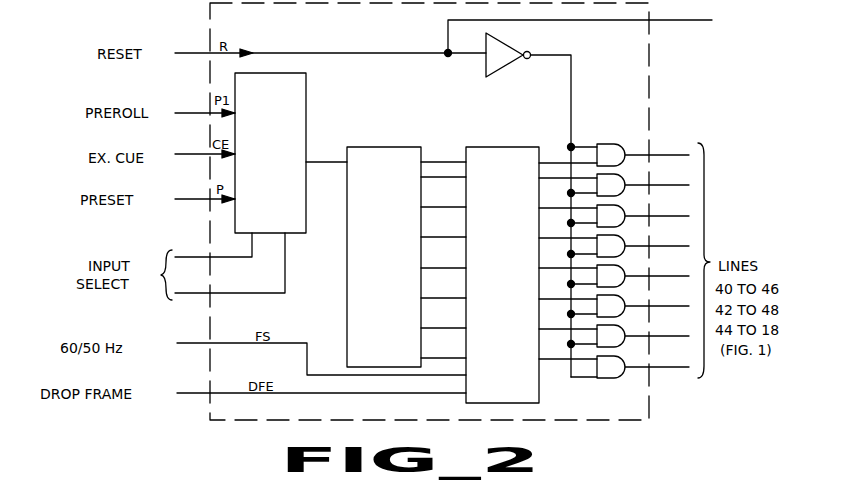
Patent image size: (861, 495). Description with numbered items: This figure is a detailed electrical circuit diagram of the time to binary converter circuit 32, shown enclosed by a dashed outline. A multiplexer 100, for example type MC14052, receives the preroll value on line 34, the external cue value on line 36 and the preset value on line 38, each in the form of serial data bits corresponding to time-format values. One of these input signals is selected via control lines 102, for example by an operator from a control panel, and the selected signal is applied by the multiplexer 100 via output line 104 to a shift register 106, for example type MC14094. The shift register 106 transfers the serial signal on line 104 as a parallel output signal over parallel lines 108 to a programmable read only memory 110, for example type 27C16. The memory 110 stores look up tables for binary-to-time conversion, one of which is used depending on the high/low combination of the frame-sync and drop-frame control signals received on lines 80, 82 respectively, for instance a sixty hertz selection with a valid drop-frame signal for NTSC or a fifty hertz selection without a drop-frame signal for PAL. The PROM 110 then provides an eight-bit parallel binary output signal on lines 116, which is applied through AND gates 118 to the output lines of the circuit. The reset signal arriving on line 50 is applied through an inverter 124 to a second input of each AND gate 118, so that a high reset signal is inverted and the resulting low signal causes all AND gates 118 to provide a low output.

The time to binary converter circuit 32 is at (649, 77).
The line 50 is at (185, 50).
The line 34 is at (185, 112).
The line 36 is at (185, 153).
The line 38 is at (183, 198).
The multiplexer 100 is at (306, 88).
The control lines 102 is at (184, 292).
The output line 104 is at (318, 162).
The shift register 106 is at (388, 148).
The parallel lines 108 is at (455, 358).
The programmable read only memory 110 is at (488, 148).
The lines 116 is at (562, 163).
The AND gates 118 is at (607, 183).
The inverter 124 is at (510, 50).
The line 80 is at (228, 342).
The line 82 is at (226, 392).